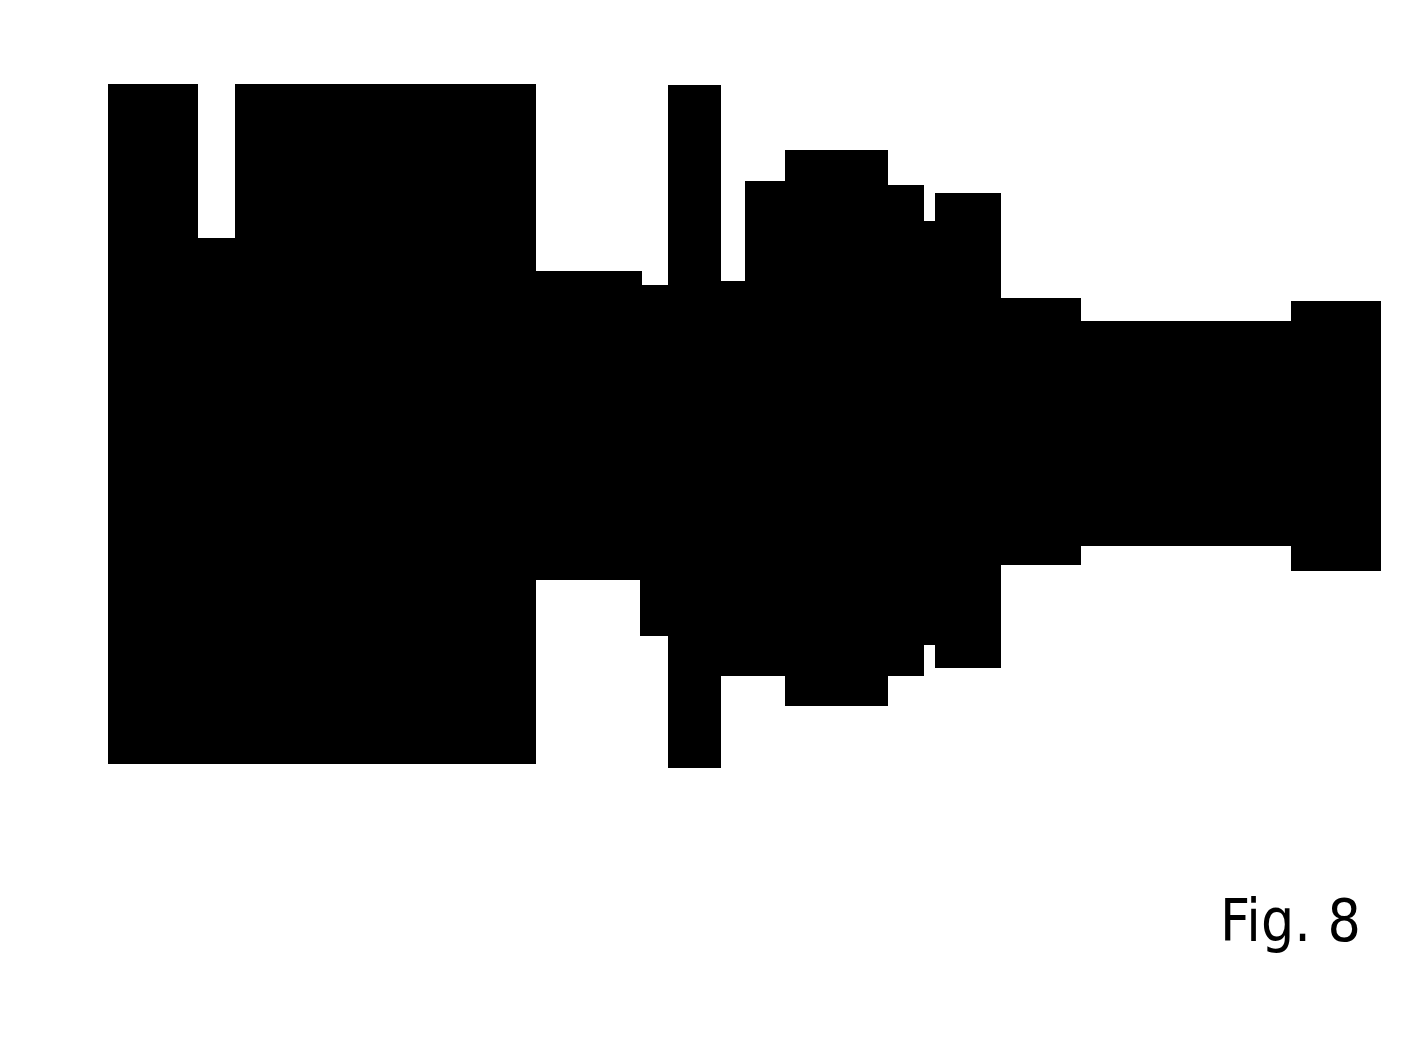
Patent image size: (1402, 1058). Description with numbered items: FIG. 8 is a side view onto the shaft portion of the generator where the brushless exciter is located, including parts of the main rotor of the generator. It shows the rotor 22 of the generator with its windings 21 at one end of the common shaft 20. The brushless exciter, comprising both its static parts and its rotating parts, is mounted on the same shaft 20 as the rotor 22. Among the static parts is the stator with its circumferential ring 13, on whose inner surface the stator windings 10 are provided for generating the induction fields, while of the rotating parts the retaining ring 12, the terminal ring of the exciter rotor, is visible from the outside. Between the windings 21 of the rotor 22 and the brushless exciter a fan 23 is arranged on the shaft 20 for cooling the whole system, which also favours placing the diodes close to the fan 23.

The stator windings 10 is at (898, 180).
The retaining ring 12 is at (960, 185).
The circumferential ring 13 is at (828, 143).
The shaft 20 is at (1173, 317).
The windings 21 is at (346, 734).
The rotor 22 is at (241, 835).
The fan 23 is at (712, 750).